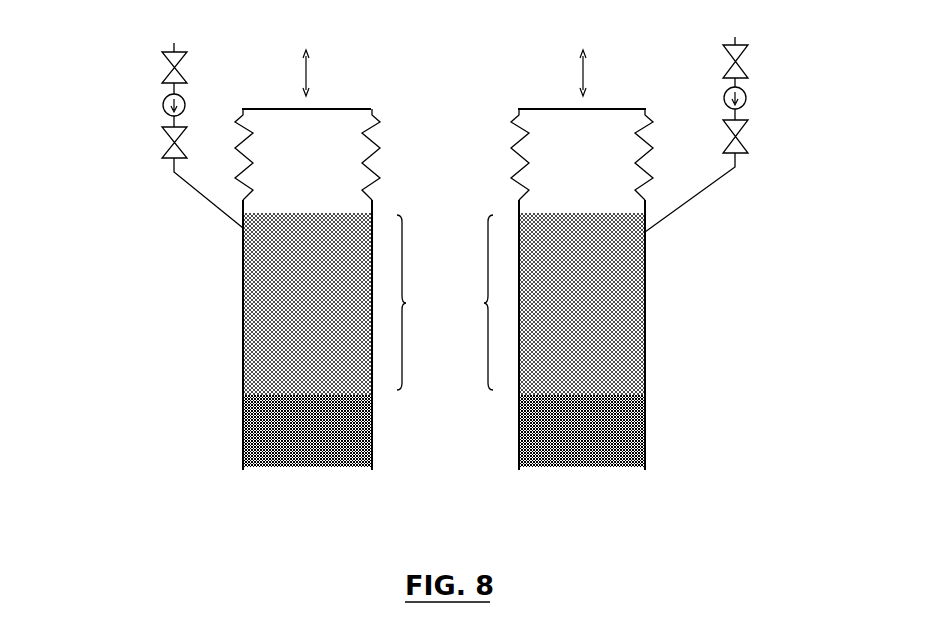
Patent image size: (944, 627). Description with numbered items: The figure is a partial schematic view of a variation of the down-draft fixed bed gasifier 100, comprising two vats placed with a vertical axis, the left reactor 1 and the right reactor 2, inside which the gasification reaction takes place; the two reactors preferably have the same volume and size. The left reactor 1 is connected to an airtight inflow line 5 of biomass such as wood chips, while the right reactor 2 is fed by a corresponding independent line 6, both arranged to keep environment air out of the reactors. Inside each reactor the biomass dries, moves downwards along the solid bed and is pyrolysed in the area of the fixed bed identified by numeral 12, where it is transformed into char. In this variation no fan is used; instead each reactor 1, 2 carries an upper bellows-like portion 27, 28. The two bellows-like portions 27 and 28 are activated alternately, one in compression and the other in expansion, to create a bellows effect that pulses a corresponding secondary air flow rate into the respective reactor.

The left reactor 1 is at (367, 108).
The right reactor 2 is at (530, 108).
The inflow line 5 is at (148, 84).
The feeding line 6 is at (764, 85).
The pyrolysis area 12 is at (445, 302).
The upper bellows-like portion 27 is at (377, 150).
The upper bellows-like portion 28 is at (518, 153).
The gasifier 100 is at (704, 308).